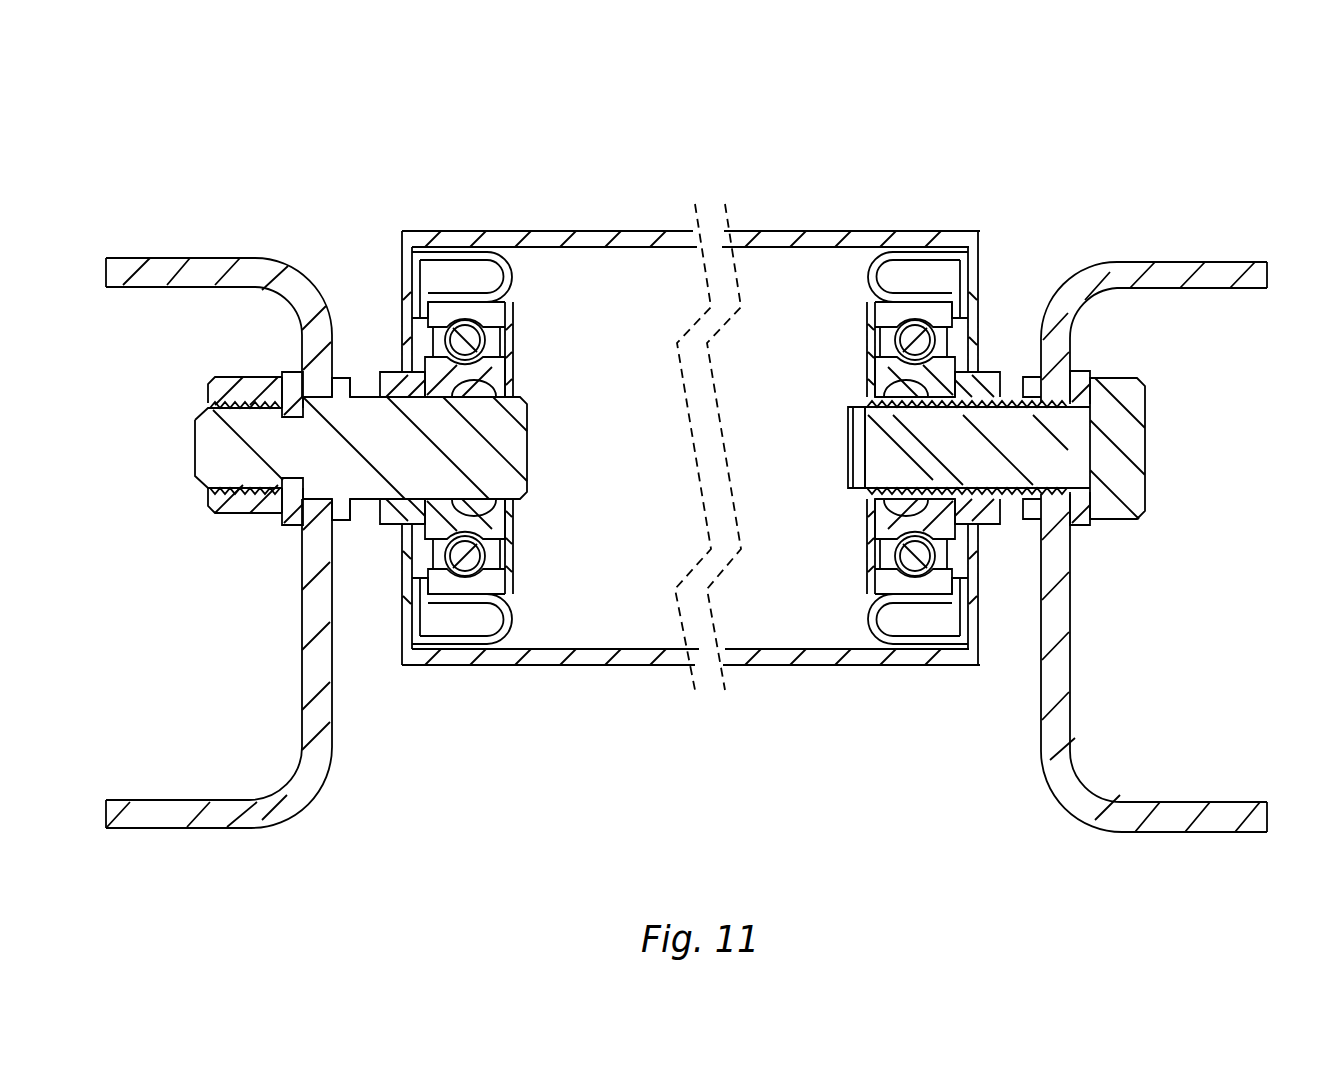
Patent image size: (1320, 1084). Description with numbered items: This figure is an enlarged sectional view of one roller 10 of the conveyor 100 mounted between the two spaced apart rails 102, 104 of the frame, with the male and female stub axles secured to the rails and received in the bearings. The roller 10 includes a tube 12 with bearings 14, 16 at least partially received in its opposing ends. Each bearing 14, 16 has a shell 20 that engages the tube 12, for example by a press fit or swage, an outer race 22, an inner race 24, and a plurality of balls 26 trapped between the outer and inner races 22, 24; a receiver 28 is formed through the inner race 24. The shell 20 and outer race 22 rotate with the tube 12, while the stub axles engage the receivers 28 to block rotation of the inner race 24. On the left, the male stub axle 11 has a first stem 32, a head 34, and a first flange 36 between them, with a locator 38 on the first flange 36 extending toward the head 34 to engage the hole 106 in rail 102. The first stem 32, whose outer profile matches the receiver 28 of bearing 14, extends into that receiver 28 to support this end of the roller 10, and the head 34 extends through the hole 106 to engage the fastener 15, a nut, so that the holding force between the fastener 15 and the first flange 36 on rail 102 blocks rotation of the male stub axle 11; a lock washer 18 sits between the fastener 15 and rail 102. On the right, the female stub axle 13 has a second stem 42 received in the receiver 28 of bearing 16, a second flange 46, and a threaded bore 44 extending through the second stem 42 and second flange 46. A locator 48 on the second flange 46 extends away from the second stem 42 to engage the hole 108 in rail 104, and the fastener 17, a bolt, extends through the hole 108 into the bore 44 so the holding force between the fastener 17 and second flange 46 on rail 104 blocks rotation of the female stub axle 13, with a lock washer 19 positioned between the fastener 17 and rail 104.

The roller 10 is at (770, 218).
The conveyor 100 is at (1196, 115).
The rail 102 is at (183, 250).
The rail 104 is at (1230, 253).
The hole 106 is at (318, 380).
The hole 108 is at (1055, 393).
The male stub axle 11 is at (357, 363).
The female stub axle 13 is at (1017, 357).
The tube 12 is at (647, 226).
The bearing 14 is at (532, 266).
The bearing 16 is at (852, 275).
The shell 20 is at (452, 246).
The outer race 22 is at (502, 320).
The inner race 24 is at (498, 378).
The balls 26 is at (490, 340).
The receiver 28 is at (490, 385).
The first stem 32 is at (520, 448).
The head 34 is at (190, 447).
The first flange 36 is at (352, 520).
The locator 38 is at (312, 403).
The fastener 15 is at (223, 522).
The lock washer 18 is at (285, 532).
The fastener 17 is at (1160, 463).
The lock washer 19 is at (1088, 535).
The second stem 42 is at (852, 497).
The bore 44 is at (850, 450).
The second flange 46 is at (1024, 527).
The locator 48 is at (1063, 398).